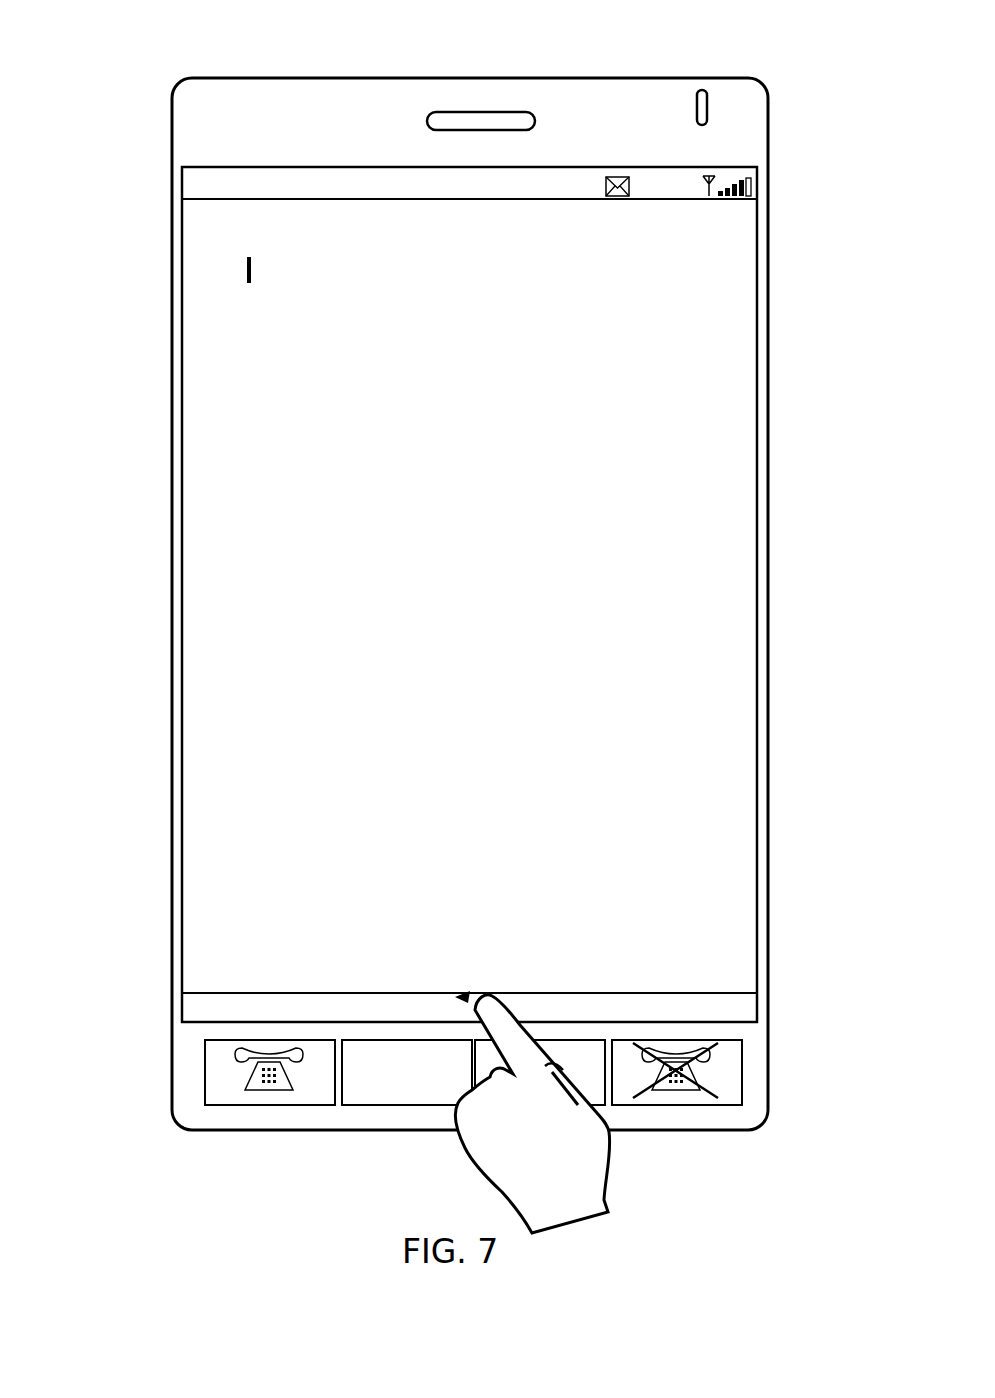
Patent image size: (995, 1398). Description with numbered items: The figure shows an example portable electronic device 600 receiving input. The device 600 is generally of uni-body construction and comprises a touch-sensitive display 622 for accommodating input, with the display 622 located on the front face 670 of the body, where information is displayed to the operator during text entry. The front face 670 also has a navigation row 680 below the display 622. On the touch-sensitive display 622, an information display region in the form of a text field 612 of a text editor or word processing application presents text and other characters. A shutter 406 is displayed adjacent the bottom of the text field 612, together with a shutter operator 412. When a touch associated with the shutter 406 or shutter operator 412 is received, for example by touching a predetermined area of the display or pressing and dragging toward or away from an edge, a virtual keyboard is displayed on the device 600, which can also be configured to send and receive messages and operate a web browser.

The portable electronic device 600 is at (146, 88).
The text field 612 is at (230, 438).
The touch-sensitive display 622 is at (225, 579).
The shutter 406 is at (725, 1005).
The shutter operator 412 is at (466, 997).
The front face 670 is at (188, 1043).
The navigation row 680 is at (224, 1109).